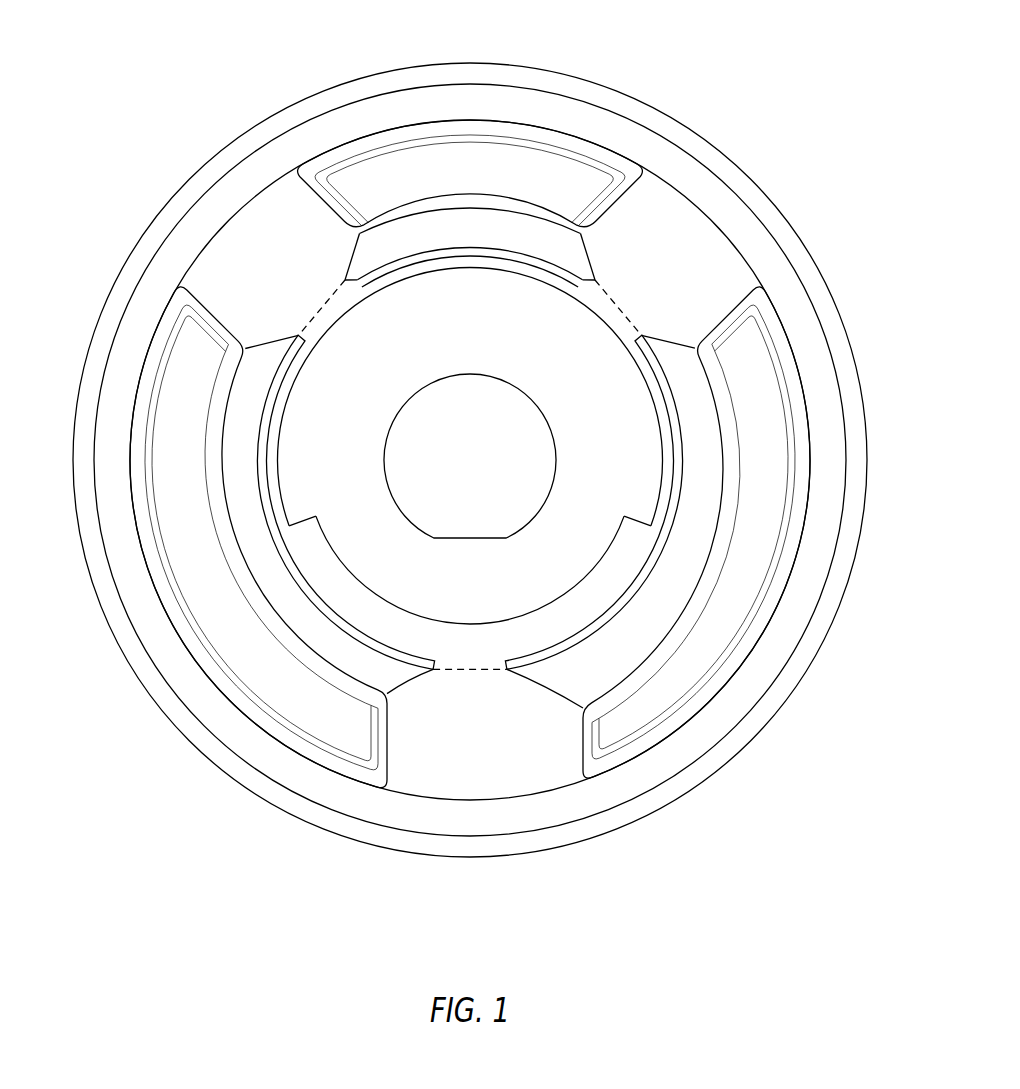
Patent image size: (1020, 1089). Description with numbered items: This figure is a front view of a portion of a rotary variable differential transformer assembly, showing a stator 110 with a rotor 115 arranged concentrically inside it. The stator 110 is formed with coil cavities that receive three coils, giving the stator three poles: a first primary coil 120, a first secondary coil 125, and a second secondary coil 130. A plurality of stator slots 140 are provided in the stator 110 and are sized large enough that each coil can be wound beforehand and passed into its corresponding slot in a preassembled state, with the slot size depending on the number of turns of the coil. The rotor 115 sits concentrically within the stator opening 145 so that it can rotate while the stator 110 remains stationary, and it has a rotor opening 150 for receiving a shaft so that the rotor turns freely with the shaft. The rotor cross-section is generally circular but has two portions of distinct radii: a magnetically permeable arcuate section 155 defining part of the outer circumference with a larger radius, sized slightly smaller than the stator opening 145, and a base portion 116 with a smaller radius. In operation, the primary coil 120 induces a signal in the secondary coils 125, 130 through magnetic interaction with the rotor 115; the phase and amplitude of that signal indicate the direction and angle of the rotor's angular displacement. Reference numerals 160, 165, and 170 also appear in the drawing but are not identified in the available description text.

The stator 110 is at (540, 815).
The rotor 115 is at (455, 305).
The base portion 116 is at (528, 615).
The first primary coil 120 is at (478, 163).
The first secondary coil 125 is at (178, 378).
The second secondary coil 130 is at (743, 347).
The stator slots 140 is at (313, 250).
The stator opening 145 is at (640, 560).
The rotor opening 150 is at (547, 472).
The magnetically permeable arcuate section 155 is at (530, 265).
The left groove 160 is at (214, 260).
The right groove 165 is at (722, 262).
The bottom slot floor 170 is at (418, 768).